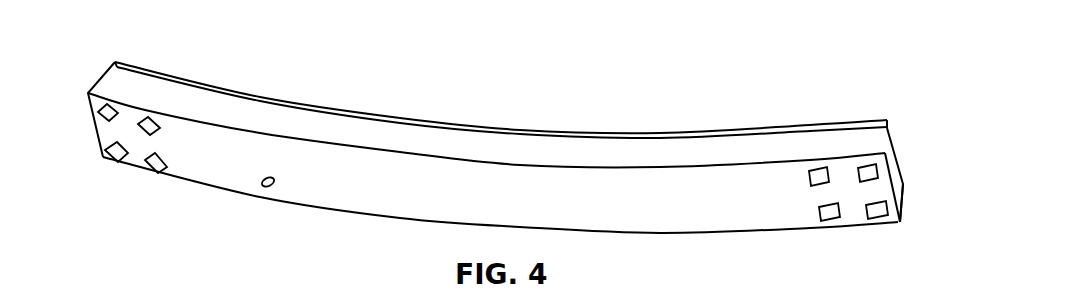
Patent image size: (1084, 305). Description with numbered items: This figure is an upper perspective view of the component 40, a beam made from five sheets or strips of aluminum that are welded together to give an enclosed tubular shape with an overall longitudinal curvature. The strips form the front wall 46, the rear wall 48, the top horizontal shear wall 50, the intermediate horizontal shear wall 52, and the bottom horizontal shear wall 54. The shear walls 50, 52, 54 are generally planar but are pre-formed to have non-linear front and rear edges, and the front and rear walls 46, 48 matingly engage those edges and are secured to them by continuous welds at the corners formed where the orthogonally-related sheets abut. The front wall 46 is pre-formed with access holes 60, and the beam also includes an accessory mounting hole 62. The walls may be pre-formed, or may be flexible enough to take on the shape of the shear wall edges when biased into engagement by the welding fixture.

The component 40 is at (735, 120).
The front wall 46 is at (373, 190).
The rear wall 48 is at (393, 118).
The top horizontal shear wall 50 is at (857, 137).
The intermediate horizontal shear wall 52 is at (893, 156).
The bottom horizontal shear wall 54 is at (905, 188).
The access holes 60 is at (148, 136).
The accessory mounting hole 62 is at (268, 188).